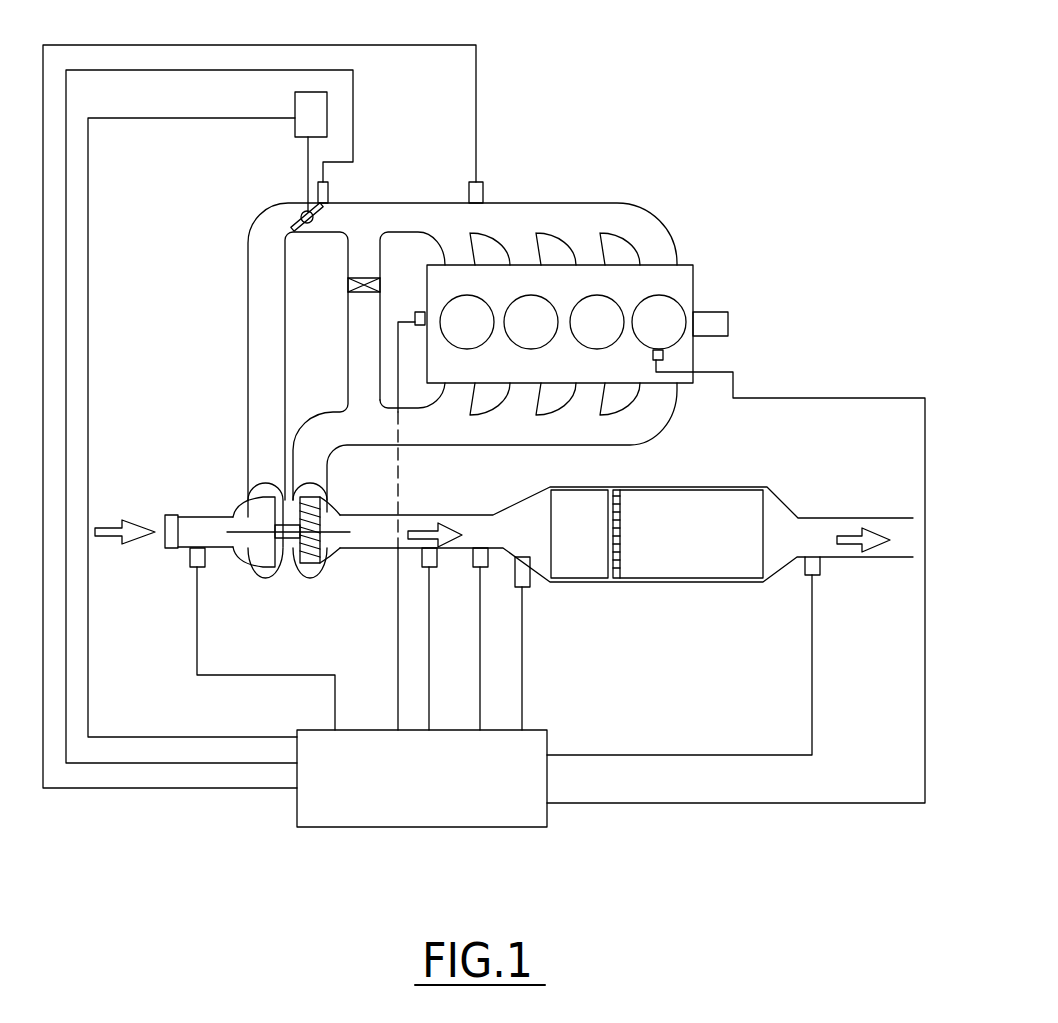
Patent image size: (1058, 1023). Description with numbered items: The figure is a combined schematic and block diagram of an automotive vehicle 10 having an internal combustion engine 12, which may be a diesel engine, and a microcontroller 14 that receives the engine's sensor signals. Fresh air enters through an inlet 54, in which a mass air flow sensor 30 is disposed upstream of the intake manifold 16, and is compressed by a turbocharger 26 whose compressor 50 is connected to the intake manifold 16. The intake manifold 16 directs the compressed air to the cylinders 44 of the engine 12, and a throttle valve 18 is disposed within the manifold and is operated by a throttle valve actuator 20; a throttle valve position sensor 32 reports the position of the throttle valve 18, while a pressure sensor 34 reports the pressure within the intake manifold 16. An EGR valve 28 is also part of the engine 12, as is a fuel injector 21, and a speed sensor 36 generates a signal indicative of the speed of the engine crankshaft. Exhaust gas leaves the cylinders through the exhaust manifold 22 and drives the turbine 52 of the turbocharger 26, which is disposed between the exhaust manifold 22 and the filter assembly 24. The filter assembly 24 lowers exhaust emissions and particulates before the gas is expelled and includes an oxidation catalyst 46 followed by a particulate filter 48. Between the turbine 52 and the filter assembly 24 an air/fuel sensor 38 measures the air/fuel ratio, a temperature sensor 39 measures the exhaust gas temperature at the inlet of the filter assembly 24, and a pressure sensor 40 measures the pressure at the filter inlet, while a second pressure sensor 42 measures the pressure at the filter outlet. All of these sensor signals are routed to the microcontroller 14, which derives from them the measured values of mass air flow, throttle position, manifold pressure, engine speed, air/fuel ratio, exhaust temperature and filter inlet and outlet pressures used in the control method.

The automotive vehicle 10 is at (680, 63).
The internal combustion engine 12 is at (634, 206).
The microcontroller 14 is at (440, 790).
The intake manifold 16 is at (563, 203).
The throttle valve 18 is at (303, 213).
The throttle valve actuator 20 is at (294, 100).
The fuel injector 21 is at (665, 357).
The exhaust manifold 22 is at (500, 441).
The filter assembly 24 is at (708, 470).
The turbocharger 26 is at (247, 572).
The EGR valve 28 is at (348, 278).
The mass air flow sensor 30 is at (192, 570).
The throttle valve position sensor 32 is at (330, 193).
The pressure sensor 34 is at (483, 191).
The speed sensor 36 is at (420, 312).
The air/fuel sensor 38 is at (432, 570).
The temperature sensor 39 is at (527, 590).
The pressure sensor 40 is at (483, 570).
The pressure sensor 42 is at (822, 567).
The cylinders 44 is at (667, 308).
The oxidation catalyst 46 is at (583, 568).
The particulate filter 48 is at (700, 565).
The compressor 50 is at (267, 577).
The turbine 52 is at (310, 577).
The inlet 54 is at (192, 513).